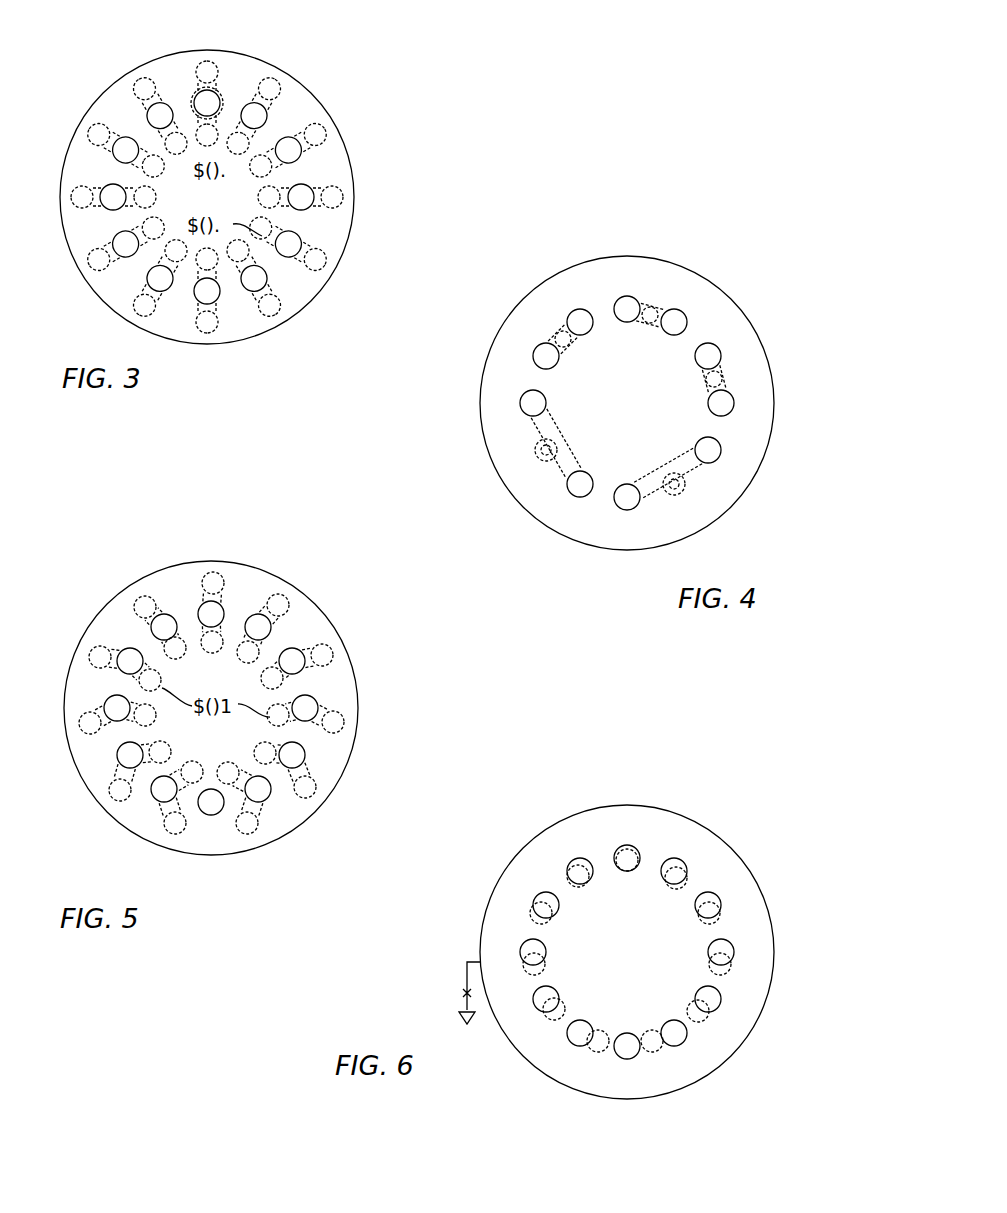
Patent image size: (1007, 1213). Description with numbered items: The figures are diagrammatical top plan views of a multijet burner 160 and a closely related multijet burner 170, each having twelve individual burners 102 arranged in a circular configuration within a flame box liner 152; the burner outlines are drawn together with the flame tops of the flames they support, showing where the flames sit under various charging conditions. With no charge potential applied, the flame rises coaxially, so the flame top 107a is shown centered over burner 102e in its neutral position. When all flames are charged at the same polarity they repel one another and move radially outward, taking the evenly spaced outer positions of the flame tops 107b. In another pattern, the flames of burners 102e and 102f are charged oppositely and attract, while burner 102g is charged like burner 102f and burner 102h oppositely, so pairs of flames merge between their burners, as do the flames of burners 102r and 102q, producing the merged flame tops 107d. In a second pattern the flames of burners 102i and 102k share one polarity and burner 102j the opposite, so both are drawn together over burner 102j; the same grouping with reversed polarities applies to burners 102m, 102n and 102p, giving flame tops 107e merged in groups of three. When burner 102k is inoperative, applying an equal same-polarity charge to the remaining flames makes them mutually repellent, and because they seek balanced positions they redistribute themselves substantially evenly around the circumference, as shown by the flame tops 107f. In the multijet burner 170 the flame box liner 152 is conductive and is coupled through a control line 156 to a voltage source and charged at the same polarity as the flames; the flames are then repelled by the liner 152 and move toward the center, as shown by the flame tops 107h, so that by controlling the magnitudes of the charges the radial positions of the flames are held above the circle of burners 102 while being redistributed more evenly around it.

In FIG. 6, the burner 102 is at (548, 893).
In FIG. 3, the burner 102e is at (199, 96).
In FIG. 4, the burner 102e is at (631, 296).
In FIG. 5, the burner 102e is at (229, 607).
In FIG. 3, the burner 102f is at (267, 118).
In FIG. 4, the burner 102f is at (686, 313).
In FIG. 5, the burner 102f is at (272, 632).
In FIG. 4, the burner 102g is at (718, 346).
In FIG. 4, the burner 102h is at (709, 406).
In FIG. 3, the burner 102i is at (268, 283).
In FIG. 4, the burner 102i is at (697, 448).
In FIG. 4, the burner 102j is at (686, 487).
In FIG. 5, the burner 102j is at (268, 800).
In FIG. 4, the burner 102k is at (618, 510).
In FIG. 5, the burner 102k is at (215, 815).
In FIG. 6, the burner 102k is at (631, 1059).
In FIG. 4, the burner 102m is at (569, 497).
In FIG. 5, the burner 102m is at (156, 800).
In FIG. 4, the burner 102n is at (582, 438).
In FIG. 4, the burner 102p is at (519, 404).
In FIG. 4, the burner 102q is at (533, 353).
In FIG. 4, the burner 102r is at (591, 333).
In FIG. 5, the burner 102r is at (152, 631).
In FIG. 3, the flame top 107a is at (224, 92).
In FIG. 3, the flame top 107b is at (323, 138).
In FIG. 4, the flame top 107d is at (662, 300).
In FIG. 4, the flame top 107e is at (533, 455).
In FIG. 5, the flame top 107f is at (344, 724).
In FIG. 6, the flame top 107f is at (690, 1005).
In FIG. 6, the flame top 107h is at (697, 871).
In FIG. 3, the flame box liner 152 is at (133, 70).
In FIG. 4, the flame box liner 152 is at (578, 263).
In FIG. 5, the flame box liner 152 is at (186, 564).
In FIG. 6, the flame box liner 152 is at (600, 807).
In FIG. 6, the control line 156 is at (467, 962).
In FIG. 3, the multijet burner 160 is at (54, 129).
In FIG. 4, the multijet burner 160 is at (589, 188).
In FIG. 5, the multijet burner 160 is at (97, 543).
In FIG. 6, the multijet burner 170 is at (517, 805).